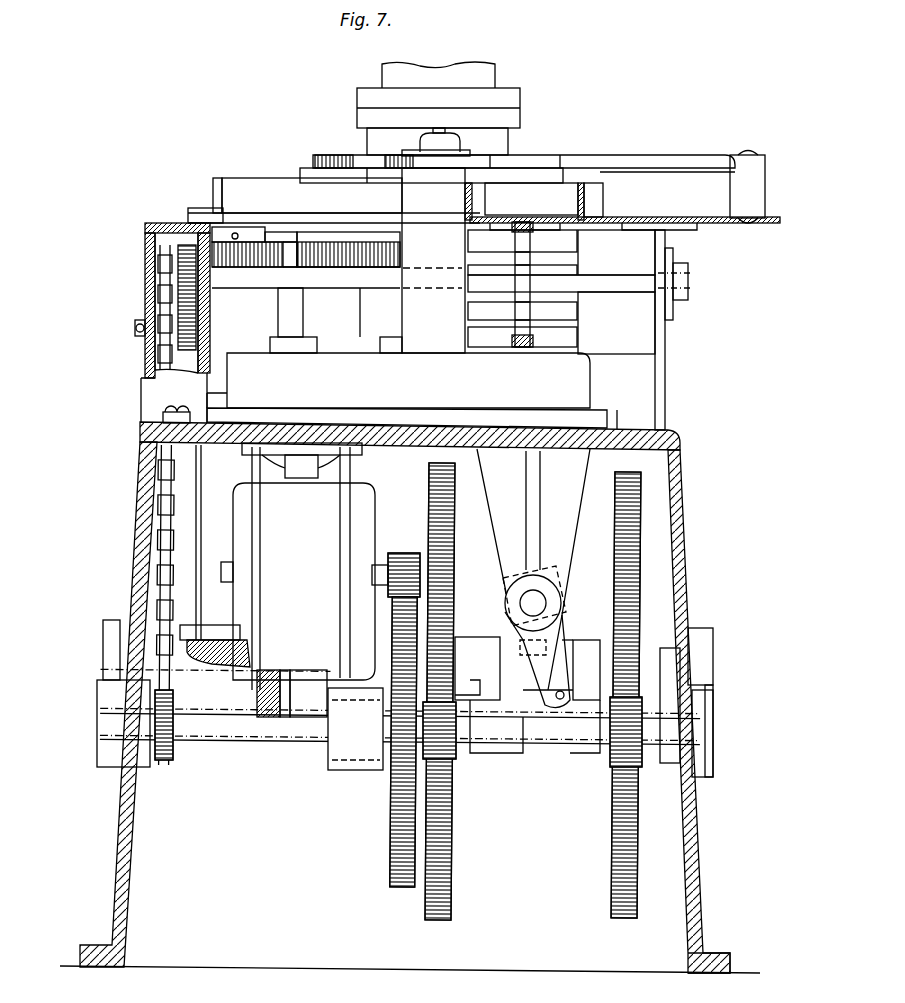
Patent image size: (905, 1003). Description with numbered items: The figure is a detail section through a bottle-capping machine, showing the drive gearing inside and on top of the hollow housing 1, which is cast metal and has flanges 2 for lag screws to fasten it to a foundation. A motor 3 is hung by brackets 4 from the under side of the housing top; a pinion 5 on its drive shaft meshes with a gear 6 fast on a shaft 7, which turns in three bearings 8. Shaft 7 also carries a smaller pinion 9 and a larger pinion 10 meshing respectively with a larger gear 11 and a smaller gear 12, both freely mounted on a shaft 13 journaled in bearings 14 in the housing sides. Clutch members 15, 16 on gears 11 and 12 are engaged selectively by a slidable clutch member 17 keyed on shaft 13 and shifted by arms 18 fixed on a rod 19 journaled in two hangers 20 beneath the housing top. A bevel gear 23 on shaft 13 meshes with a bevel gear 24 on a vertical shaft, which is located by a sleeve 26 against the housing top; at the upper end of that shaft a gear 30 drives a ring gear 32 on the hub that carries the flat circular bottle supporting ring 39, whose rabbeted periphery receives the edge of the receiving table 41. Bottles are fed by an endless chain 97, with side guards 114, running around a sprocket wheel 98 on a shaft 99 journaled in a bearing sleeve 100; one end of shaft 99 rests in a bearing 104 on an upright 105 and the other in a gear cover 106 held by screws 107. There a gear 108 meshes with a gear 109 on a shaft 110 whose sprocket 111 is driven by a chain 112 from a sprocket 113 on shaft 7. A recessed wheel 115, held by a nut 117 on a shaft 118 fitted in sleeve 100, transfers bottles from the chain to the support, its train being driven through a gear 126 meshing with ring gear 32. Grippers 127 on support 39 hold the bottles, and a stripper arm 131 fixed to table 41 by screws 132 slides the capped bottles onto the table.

The hollow housing 1 is at (700, 830).
The flanges 2 is at (728, 956).
The motor 3 is at (298, 568).
The brackets 4 is at (302, 460).
The pinion 5 is at (406, 553).
The gear 6 is at (392, 810).
The shaft 7 is at (240, 742).
The bearings 8 is at (106, 755).
The pinion 9 is at (452, 762).
The pinion 10 is at (612, 767).
The gear 11 is at (465, 876).
The gear 12 is at (614, 884).
The shaft 13 is at (494, 690).
The bearings 14 is at (104, 636).
The clutch member 15 is at (468, 640).
The clutch member 16 is at (604, 642).
The slidable clutch member 17 is at (575, 640).
The arms 18 is at (538, 650).
The rod 19 is at (522, 604).
The hangers 20 is at (533, 578).
The bevel gear 23 is at (258, 689).
The bevel gear 24 is at (207, 640).
The sleeve 26 is at (202, 467).
The gear 30 is at (250, 266).
The ring gear 32 is at (395, 290).
The bottle supporting ring 39 is at (195, 208).
The table 41 is at (696, 217).
The endless chain 97 is at (577, 341).
The sprocket wheel 98 is at (530, 280).
The shaft 99 is at (624, 289).
The bearing sleeve 100 is at (433, 260).
The bearing 104 is at (688, 299).
The upright 105 is at (665, 348).
The gear cover 106 is at (163, 224).
The screws 107 is at (160, 411).
The gear 108 is at (148, 242).
The gear 109 is at (196, 345).
The shaft 110 is at (135, 328).
The sprocket 111 is at (160, 295).
The chain 112 is at (158, 522).
The sprocket 113 is at (150, 718).
The side guards 114 is at (466, 198).
The recessed wheel 115 is at (322, 158).
The nut 117 is at (420, 146).
The shaft 118 is at (443, 130).
The gear 126 is at (345, 262).
The grippers 127 is at (334, 200).
The stripper arm 131 is at (675, 160).
The screws 132 is at (748, 153).